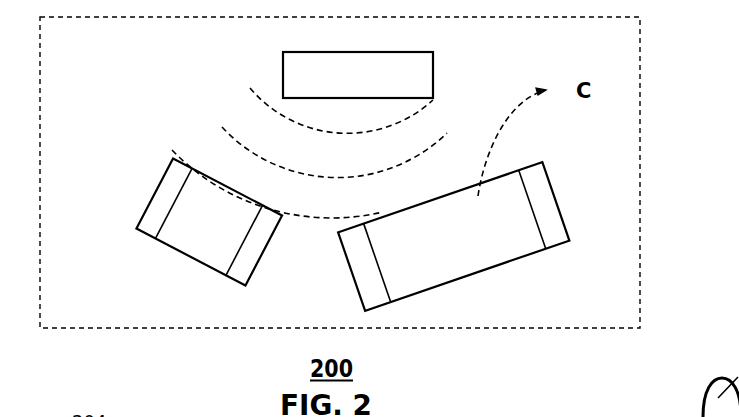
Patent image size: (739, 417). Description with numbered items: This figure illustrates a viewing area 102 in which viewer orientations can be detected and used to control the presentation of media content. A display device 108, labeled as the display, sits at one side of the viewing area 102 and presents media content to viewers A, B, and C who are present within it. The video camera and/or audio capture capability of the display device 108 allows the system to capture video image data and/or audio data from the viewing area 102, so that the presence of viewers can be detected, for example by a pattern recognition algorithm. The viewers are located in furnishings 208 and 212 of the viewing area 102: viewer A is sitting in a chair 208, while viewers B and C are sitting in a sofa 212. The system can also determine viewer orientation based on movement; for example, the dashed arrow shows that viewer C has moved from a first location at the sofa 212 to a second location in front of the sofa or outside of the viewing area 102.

The viewing area 102 is at (634, 303).
The display device 108 is at (429, 76).
The chair 208 is at (157, 192).
The sofa 212 is at (553, 218).